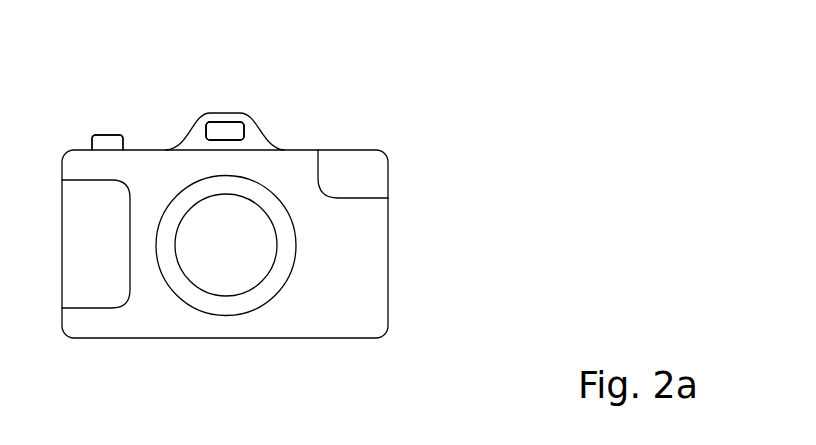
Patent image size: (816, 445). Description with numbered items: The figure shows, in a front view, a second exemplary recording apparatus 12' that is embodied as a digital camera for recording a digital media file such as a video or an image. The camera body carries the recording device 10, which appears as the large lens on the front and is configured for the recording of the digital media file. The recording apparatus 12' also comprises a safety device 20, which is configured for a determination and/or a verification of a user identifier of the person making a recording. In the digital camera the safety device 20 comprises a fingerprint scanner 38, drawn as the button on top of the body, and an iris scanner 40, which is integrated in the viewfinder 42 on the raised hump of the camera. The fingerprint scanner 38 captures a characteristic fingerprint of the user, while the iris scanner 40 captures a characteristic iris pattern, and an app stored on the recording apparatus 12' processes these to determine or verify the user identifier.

The recording device 10 is at (248, 250).
The second recording apparatus 12' is at (475, 144).
The safety device 20 is at (168, 136).
The fingerprint scanner 38 is at (104, 120).
The iris scanner 40 is at (226, 117).
The viewfinder 42 is at (232, 132).